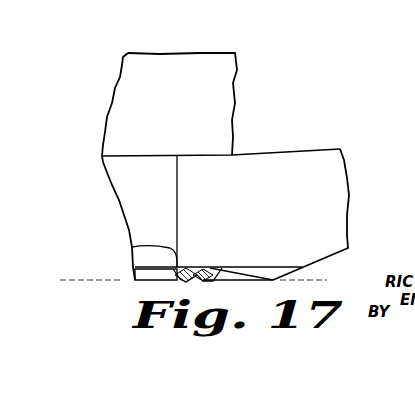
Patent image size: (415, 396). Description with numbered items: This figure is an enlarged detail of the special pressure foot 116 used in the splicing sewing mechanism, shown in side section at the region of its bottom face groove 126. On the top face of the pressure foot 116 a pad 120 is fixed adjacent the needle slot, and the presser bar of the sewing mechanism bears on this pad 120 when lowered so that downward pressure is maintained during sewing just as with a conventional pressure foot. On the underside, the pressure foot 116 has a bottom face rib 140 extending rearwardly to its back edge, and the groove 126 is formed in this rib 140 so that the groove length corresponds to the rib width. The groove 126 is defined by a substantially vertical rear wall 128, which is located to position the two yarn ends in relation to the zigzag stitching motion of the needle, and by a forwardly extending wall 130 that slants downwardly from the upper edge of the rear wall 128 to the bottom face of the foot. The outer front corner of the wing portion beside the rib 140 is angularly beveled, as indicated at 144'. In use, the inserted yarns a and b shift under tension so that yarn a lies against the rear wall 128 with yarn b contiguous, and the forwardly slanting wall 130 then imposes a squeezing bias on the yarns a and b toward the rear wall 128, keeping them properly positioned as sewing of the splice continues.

The pad 120 is at (181, 116).
The pressure foot 116 is at (283, 152).
The bottom face rib 140 is at (135, 269).
The angularly beveled outer front corner portion 144' is at (122, 236).
The rear wall 128 is at (160, 281).
The bottom face groove 126 is at (203, 268).
The forwardly extending wall 130 is at (230, 268).
The yarn a is at (182, 279).
The yarn b is at (200, 277).